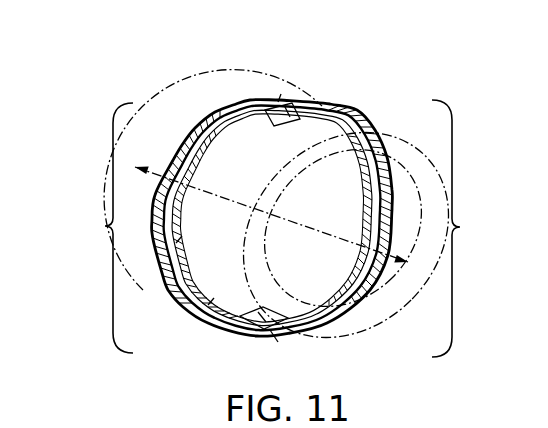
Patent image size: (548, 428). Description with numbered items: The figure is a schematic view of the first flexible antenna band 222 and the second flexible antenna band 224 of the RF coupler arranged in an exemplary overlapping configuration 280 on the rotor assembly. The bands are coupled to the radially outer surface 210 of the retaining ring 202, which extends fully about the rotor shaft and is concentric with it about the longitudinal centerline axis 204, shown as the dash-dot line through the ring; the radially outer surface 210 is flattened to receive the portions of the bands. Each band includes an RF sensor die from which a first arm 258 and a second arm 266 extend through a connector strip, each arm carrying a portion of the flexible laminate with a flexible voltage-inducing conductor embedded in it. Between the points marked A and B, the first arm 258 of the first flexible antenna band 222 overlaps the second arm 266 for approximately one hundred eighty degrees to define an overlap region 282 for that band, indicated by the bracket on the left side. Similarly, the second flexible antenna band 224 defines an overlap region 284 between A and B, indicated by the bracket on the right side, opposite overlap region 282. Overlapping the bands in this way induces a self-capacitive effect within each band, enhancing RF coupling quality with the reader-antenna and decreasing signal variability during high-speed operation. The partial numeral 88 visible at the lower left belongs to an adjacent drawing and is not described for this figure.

The retaining ring 202 is at (118, 171).
The longitudinal centerline axis 204 is at (392, 288).
The radially outer surface 210 is at (177, 118).
The first flexible antenna band 222 is at (208, 305).
The second flexible antenna band 224 is at (335, 302).
The first arm 258 is at (378, 160).
The second arm 266 is at (176, 243).
The overlapping configuration 280 is at (233, 98).
The overlap region 282 is at (105, 226).
The overlap region 284 is at (460, 227).
The adjacent figure numeral 88 is at (8, 427).